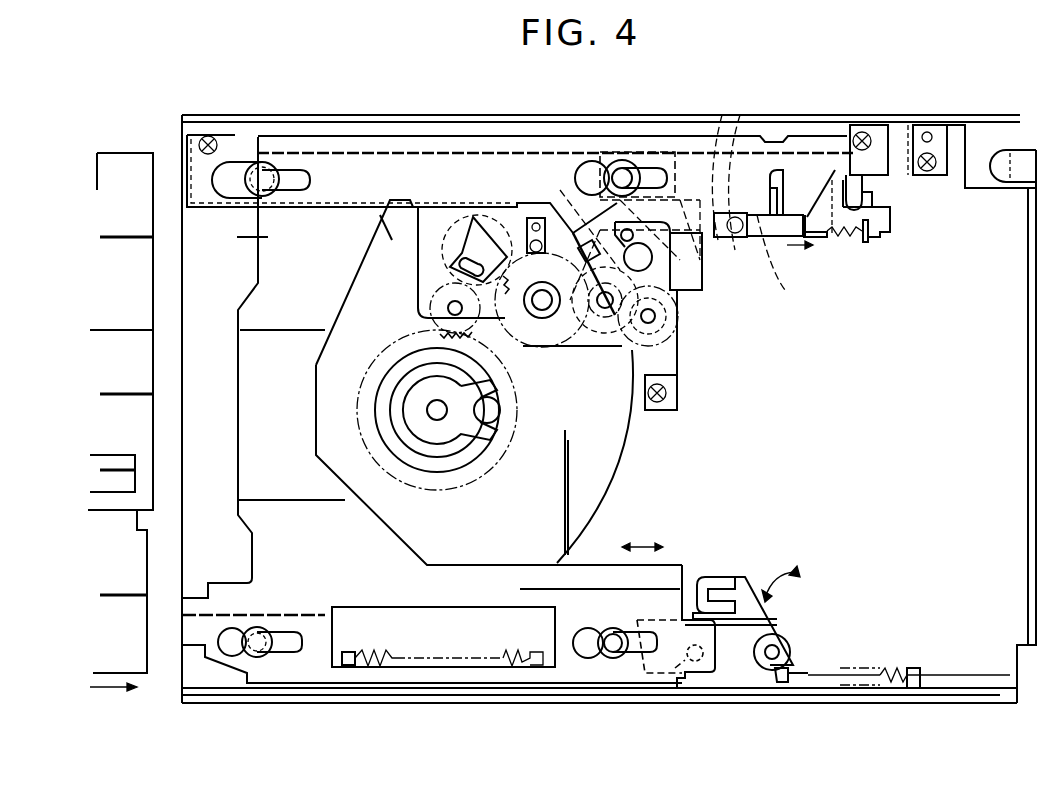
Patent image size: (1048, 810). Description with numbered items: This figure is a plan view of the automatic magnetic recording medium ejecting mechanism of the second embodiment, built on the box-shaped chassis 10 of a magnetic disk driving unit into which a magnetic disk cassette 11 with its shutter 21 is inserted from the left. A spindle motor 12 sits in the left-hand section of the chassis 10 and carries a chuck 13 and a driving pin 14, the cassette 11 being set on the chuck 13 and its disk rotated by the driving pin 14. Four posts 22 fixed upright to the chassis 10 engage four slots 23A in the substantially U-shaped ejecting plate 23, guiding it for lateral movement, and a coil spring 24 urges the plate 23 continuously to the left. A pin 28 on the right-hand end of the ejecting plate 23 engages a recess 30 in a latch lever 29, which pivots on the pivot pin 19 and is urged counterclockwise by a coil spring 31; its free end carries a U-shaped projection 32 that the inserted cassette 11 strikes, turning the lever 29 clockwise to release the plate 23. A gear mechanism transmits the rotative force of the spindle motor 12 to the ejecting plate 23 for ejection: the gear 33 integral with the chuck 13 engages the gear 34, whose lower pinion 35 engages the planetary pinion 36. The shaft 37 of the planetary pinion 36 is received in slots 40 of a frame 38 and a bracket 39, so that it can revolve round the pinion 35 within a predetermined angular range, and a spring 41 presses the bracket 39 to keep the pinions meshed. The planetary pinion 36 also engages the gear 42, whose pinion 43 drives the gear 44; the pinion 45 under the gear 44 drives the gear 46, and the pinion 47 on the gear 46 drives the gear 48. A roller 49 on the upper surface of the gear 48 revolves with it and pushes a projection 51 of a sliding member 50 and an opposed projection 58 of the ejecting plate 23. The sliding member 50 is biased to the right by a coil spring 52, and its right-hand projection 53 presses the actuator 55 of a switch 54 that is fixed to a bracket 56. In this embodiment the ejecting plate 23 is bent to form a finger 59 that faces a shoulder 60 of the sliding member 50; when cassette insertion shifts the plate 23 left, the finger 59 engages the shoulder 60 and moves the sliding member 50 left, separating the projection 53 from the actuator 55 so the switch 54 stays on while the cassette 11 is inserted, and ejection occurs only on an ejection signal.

The chassis 10 is at (466, 700).
The magnetic disk cassette 11 is at (143, 680).
The spindle motor 12 is at (610, 462).
The chuck 13 is at (478, 440).
The driving pin 14 is at (492, 418).
The pivot pin 19 is at (787, 670).
The shutter 21 is at (105, 470).
The posts 22 is at (262, 162).
The ejecting plate 23 is at (295, 668).
The slots 23A is at (300, 176).
The coil spring 24 is at (395, 660).
The pin 28 is at (700, 668).
The latch lever 29 is at (750, 660).
The recess 30 is at (672, 690).
The coil spring 31 is at (885, 685).
The U-shaped projection 32 is at (700, 577).
The gear 33 is at (360, 450).
The gear 34 is at (440, 305).
The pinion 35 is at (440, 332).
The planetary pinion 36 is at (430, 270).
The shaft 37 is at (475, 258).
The frame 38 is at (387, 232).
The bracket 39 is at (470, 235).
The slots 40 is at (445, 262).
The spring 41 is at (515, 213).
The gear 42 is at (557, 348).
The pinion 43 is at (533, 333).
The gear 44 is at (615, 350).
The pinion 45 is at (593, 335).
The gear 46 is at (672, 338).
The pinion 47 is at (680, 318).
The gear 48 is at (688, 272).
The roller 49 is at (660, 212).
The sliding member 50 is at (790, 240).
The projection 51 is at (600, 152).
The coil spring 52 is at (832, 238).
The projection 53 is at (885, 135).
The switch 54 is at (905, 125).
The actuator 55 is at (875, 180).
The bracket 56 is at (952, 158).
The projection 58 is at (738, 215).
The finger 59 is at (788, 170).
The shoulder 60 is at (758, 265).